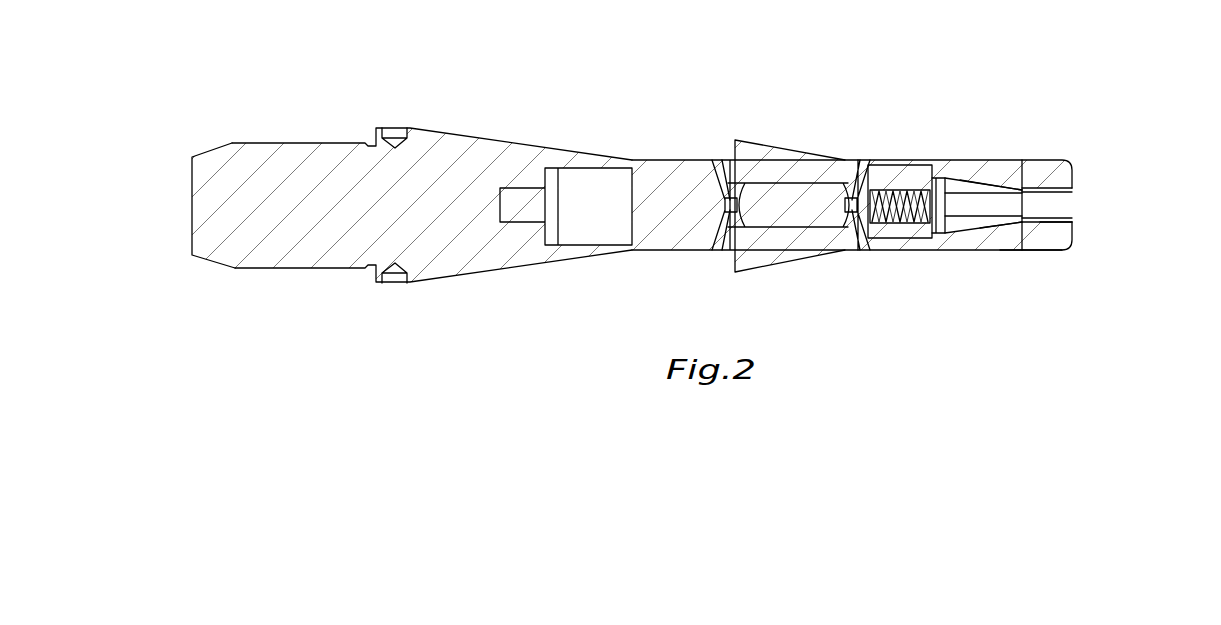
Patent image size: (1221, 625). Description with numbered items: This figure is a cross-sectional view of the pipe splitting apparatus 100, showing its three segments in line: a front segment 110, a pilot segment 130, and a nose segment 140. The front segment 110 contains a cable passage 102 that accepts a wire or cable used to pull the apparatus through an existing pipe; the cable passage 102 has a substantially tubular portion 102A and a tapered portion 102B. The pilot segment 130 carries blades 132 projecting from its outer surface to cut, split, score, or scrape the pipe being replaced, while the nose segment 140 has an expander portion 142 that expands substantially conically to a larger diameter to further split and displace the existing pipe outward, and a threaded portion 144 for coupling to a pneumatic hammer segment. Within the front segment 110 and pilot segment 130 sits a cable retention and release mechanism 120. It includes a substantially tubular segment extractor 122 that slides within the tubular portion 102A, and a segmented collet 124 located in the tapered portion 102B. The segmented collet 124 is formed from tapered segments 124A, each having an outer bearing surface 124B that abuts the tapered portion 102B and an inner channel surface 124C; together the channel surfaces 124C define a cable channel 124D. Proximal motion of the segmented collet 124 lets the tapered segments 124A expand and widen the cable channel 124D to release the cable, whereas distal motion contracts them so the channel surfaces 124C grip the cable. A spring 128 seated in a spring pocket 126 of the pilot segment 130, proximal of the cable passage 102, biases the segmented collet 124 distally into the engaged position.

The pipe splitting apparatus 100 is at (1103, 45).
The cable passage 102 is at (1062, 205).
The substantially tubular portion of the cable passage 102A is at (1055, 227).
The tapered portion of the cable passage 102B is at (1002, 227).
The front segment 110 is at (1020, 256).
The cable retention and release mechanism 120 is at (1027, 163).
The segment extractor 122 is at (1054, 187).
The segmented collet 124 is at (1004, 188).
The tapered segments 124A is at (962, 184).
The outer bearing surface 124B is at (977, 200).
The inner channel surface 124C is at (985, 190).
The cable channel 124D is at (953, 207).
The spring pocket 126 is at (917, 225).
The spring 128 is at (857, 240).
The pilot segment 130 is at (673, 272).
The blades 132 is at (765, 150).
The nose segment 140 is at (464, 138).
The expander portion 142 is at (460, 267).
The threaded portion 144 is at (293, 152).